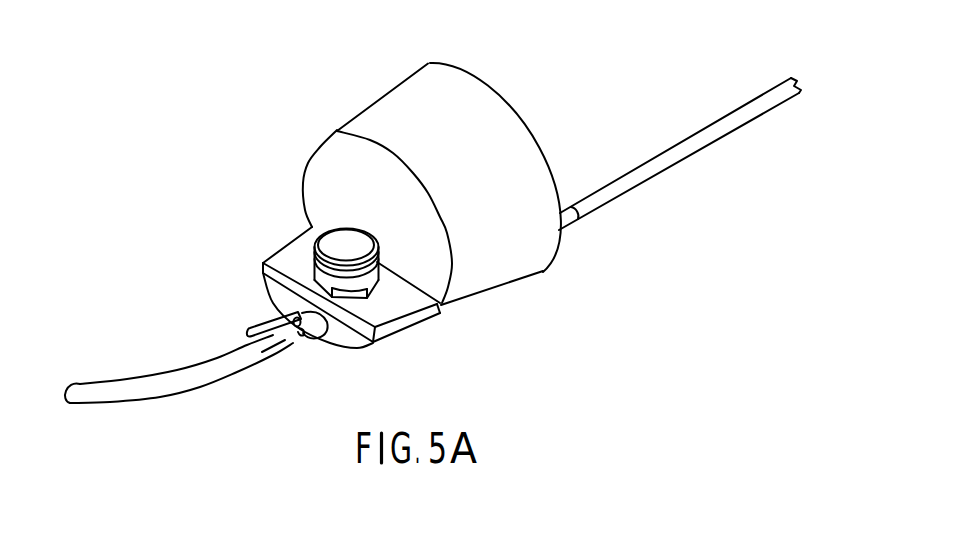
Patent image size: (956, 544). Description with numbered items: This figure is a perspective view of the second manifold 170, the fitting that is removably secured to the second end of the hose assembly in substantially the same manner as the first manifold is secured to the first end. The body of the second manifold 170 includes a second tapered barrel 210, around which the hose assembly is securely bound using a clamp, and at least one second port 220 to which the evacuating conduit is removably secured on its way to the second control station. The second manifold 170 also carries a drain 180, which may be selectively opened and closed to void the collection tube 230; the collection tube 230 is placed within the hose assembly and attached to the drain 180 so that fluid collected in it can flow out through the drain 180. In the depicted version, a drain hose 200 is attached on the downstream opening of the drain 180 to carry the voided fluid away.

The second manifold 170 is at (492, 335).
The drain 180 is at (293, 343).
The drain hose 200 is at (207, 370).
The second tapered barrel 210 is at (480, 202).
The second port 220 is at (343, 250).
The collection tube 230 is at (655, 163).